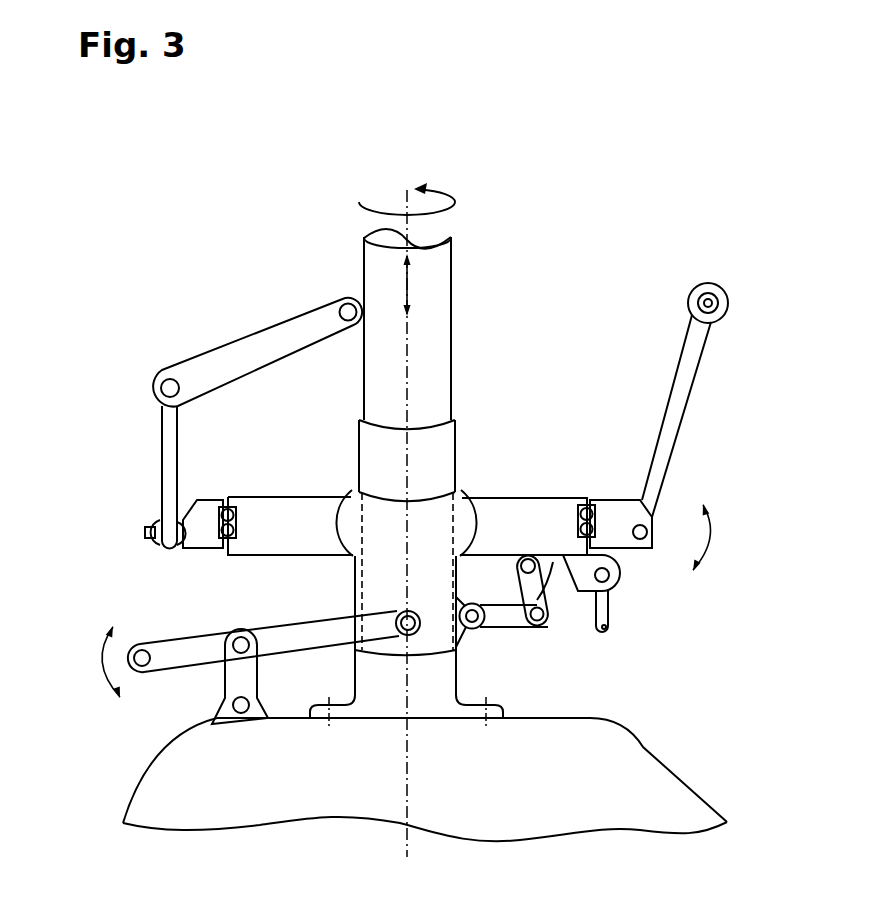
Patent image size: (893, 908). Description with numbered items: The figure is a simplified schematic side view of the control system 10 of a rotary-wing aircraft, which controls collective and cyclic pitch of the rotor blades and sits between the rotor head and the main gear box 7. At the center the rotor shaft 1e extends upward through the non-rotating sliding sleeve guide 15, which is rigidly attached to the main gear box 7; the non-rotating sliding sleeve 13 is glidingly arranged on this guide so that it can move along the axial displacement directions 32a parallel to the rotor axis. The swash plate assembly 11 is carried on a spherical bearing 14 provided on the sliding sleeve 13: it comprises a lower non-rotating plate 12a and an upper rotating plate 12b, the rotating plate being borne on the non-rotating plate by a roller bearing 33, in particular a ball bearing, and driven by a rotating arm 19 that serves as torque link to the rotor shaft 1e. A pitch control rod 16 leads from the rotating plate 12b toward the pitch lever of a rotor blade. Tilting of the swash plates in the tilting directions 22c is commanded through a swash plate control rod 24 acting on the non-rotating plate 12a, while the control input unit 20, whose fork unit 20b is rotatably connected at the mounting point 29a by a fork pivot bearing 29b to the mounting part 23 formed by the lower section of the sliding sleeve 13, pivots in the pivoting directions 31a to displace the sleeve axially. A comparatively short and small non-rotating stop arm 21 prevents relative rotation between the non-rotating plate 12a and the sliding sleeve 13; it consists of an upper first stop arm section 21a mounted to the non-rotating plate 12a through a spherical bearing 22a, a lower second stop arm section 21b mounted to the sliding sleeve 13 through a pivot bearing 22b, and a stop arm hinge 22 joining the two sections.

The control system 10 is at (180, 172).
The rotor shaft 1e is at (440, 332).
The axial displacement directions 32a is at (407, 288).
The non-rotating sliding sleeve guide 15 is at (373, 443).
The rotating arm 19 is at (232, 357).
The swash plate assembly 11 is at (262, 470).
The rotating plate 12b is at (210, 500).
The non-rotating plate 12a is at (565, 505).
The non-rotating sliding sleeve 13 is at (368, 575).
The spherical bearing 14 is at (342, 478).
The mounting part 23 is at (427, 645).
The roller bearing 33 is at (593, 514).
The pitch control rod 16 is at (680, 392).
The tilting direction 22c is at (712, 537).
The non-rotating stop arm 21 is at (562, 625).
The first stop arm section 21a is at (553, 562).
The swash plate control rod 24 is at (608, 613).
The stop arm hinge 22 is at (550, 620).
The spherical bearing 22a is at (528, 558).
The second stop arm section 21b is at (507, 618).
The pivot bearing 22b is at (473, 630).
The mounting point 29a is at (398, 619).
The control input unit 20 is at (180, 622).
The fork unit 20b is at (141, 668).
The fork pivot bearing 29b is at (232, 632).
The pivoting directions 31a is at (100, 663).
The main gear box 7 is at (662, 782).